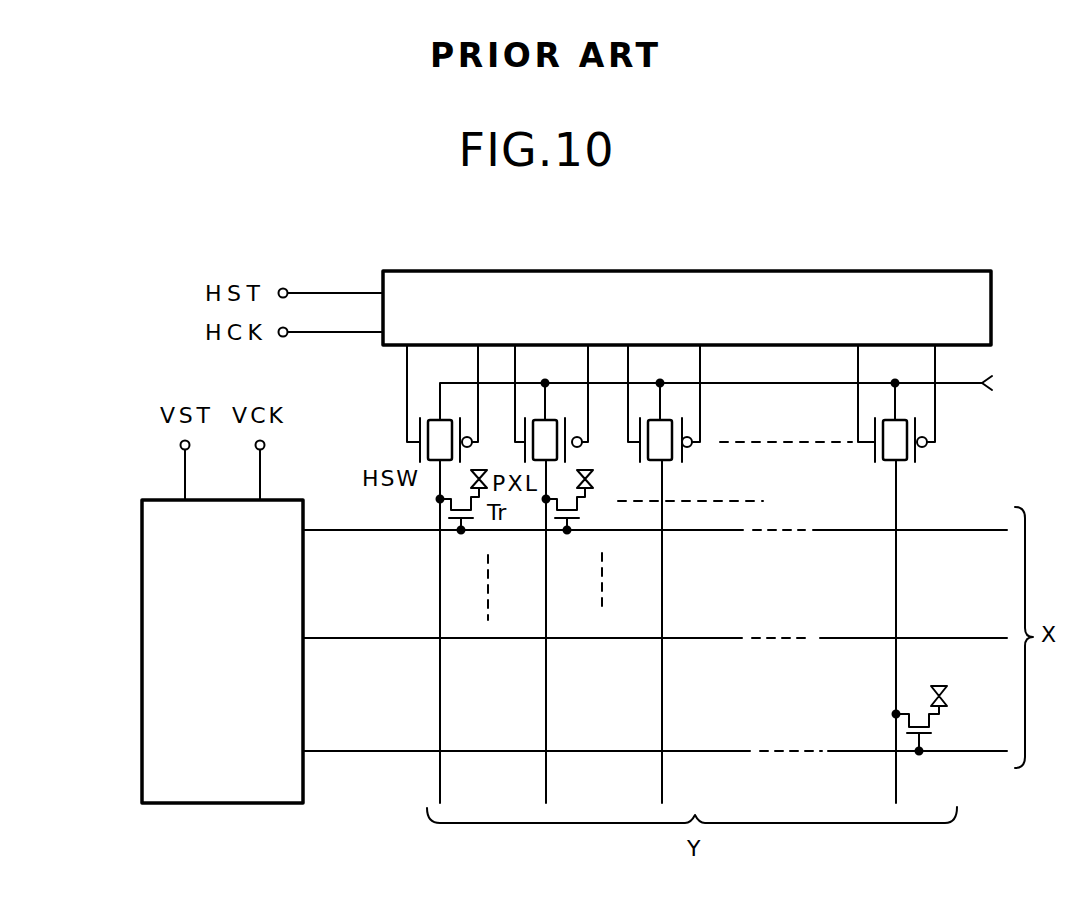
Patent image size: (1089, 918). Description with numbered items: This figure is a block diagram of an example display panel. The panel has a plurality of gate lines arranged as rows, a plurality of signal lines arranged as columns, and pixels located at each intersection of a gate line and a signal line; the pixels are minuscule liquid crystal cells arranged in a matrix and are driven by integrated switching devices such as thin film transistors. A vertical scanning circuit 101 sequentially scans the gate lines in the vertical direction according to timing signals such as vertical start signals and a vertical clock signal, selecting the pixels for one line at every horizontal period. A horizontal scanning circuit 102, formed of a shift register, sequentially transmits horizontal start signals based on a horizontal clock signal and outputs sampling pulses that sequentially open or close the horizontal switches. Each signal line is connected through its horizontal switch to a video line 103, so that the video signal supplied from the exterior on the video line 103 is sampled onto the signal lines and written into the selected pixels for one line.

The vertical scanning circuit 101 is at (215, 804).
The horizontal scanning circuit 102 is at (917, 270).
The video line 103 is at (967, 386).